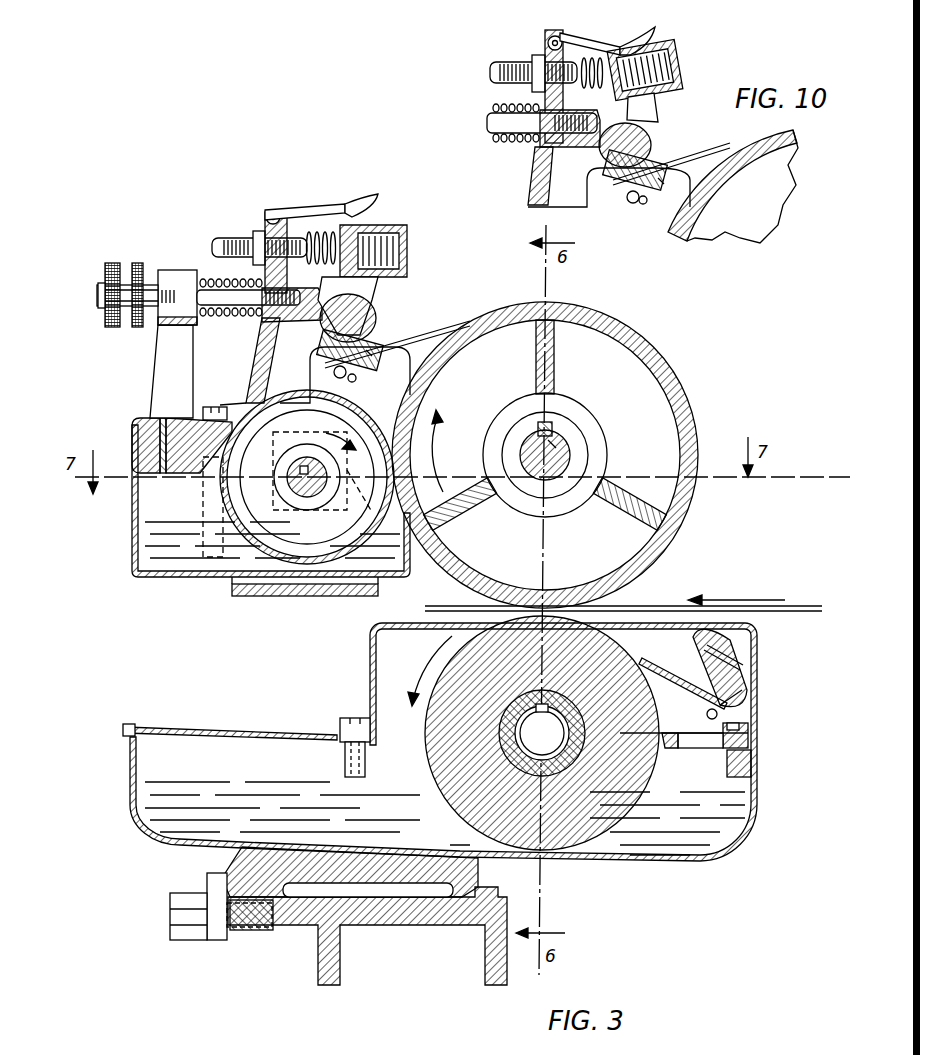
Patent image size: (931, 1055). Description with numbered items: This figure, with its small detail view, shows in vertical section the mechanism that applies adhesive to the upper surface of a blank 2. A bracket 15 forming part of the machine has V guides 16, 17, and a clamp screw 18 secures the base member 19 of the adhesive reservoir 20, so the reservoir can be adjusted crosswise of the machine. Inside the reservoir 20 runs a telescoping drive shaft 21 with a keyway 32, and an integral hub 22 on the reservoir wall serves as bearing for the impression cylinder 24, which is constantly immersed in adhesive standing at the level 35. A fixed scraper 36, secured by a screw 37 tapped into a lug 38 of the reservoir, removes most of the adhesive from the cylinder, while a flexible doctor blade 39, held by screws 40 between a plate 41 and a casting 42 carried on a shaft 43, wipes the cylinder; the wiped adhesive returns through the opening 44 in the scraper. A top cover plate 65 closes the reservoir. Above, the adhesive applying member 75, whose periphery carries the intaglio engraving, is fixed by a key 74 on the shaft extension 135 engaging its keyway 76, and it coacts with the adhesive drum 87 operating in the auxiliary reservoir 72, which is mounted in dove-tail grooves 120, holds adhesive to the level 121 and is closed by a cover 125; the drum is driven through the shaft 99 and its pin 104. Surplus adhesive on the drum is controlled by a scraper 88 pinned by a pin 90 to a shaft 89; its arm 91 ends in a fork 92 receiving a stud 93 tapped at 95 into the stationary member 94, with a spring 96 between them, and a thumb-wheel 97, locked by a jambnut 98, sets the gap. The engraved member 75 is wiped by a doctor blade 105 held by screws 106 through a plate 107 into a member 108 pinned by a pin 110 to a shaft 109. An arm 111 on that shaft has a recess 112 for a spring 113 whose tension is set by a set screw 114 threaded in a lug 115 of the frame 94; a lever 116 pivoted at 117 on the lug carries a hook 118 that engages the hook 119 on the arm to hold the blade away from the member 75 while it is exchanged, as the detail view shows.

In FIG. 3, the strip 2 is at (762, 609).
In FIG. 3, the bracket 15 is at (305, 935).
In FIG. 3, the V guide 16 is at (500, 892).
In FIG. 3, the V guide 17 is at (207, 878).
In FIG. 3, the clamp screw 18 is at (180, 918).
In FIG. 3, the base member 19 is at (275, 856).
In FIG. 3, the adhesive reservoir 20 is at (131, 784).
In FIG. 3, the telescoping drive shaft 21 is at (530, 735).
In FIG. 3, the integral hub 22 is at (520, 761).
In FIG. 3, the impression cylinder 24 is at (603, 644).
In FIG. 3, the keyway 32 is at (540, 711).
In FIG. 3, the adhesive level 35 is at (222, 779).
In FIG. 3, the fixed scraper 36 is at (669, 750).
In FIG. 3, the screw 37 is at (750, 731).
In FIG. 3, the lug 38 is at (753, 766).
In FIG. 3, the doctor blade 39 is at (688, 680).
In FIG. 3, the screws 40 is at (718, 716).
In FIG. 3, the plate 41 is at (744, 697).
In FIG. 3, the casting 42 is at (748, 681).
In FIG. 3, the shaft 43 is at (745, 657).
In FIG. 3, the opening 44 is at (699, 748).
In FIG. 3, the top cover plate 65 is at (419, 627).
In FIG. 3, the auxiliary adhesive reservoir 72 is at (133, 541).
In FIG. 3, the key 74 is at (560, 438).
In FIG. 10, the adhesive applying member 75 is at (696, 232).
In FIG. 3, the adhesive applying member 75 is at (684, 390).
In FIG. 3, the keyway 76 is at (552, 428).
In FIG. 3, the adhesive drum 87 is at (283, 396).
In FIG. 3, the scraper 88 is at (200, 418).
In FIG. 3, the shaft 89 is at (140, 436).
In FIG. 3, the pin 90 is at (152, 421).
In FIG. 3, the arm 91 is at (160, 359).
In FIG. 3, the forked member 92 is at (165, 285).
In FIG. 10, the stud 93 is at (490, 117).
In FIG. 3, the stud 93 is at (194, 290).
In FIG. 10, the stationary member 94 is at (533, 190).
In FIG. 3, the stationary member 94 is at (256, 363).
In FIG. 10, the tapped connection 95 is at (545, 142).
In FIG. 3, the tapped connection 95 is at (262, 316).
In FIG. 10, the spring 96 is at (493, 137).
In FIG. 3, the spring 96 is at (220, 280).
In FIG. 3, the thumb-wheel 97 is at (131, 270).
In FIG. 3, the jambnut 98 is at (104, 290).
In FIG. 3, the shaft 99 is at (300, 497).
In FIG. 3, the pin 104 is at (327, 498).
In FIG. 10, the doctor blade 105 is at (666, 180).
In FIG. 3, the doctor blade 105 is at (367, 353).
In FIG. 10, the screws 106 is at (643, 204).
In FIG. 3, the screws 106 is at (352, 372).
In FIG. 10, the plate 107 is at (627, 195).
In FIG. 3, the plate 107 is at (335, 368).
In FIG. 10, the member 108 is at (728, 147).
In FIG. 3, the member 108 is at (372, 334).
In FIG. 10, the shaft 109 is at (648, 130).
In FIG. 3, the shaft 109 is at (323, 340).
In FIG. 10, the pin 110 is at (605, 150).
In FIG. 3, the pin 110 is at (325, 314).
In FIG. 10, the arm 111 is at (648, 108).
In FIG. 3, the arm 111 is at (372, 291).
In FIG. 10, the recess 112 is at (676, 68).
In FIG. 3, the recess 112 is at (407, 268).
In FIG. 10, the spring 113 is at (598, 85).
In FIG. 3, the spring 113 is at (321, 261).
In FIG. 10, the set screw 114 is at (505, 64).
In FIG. 3, the set screw 114 is at (233, 238).
In FIG. 10, the lug 115 is at (538, 58).
In FIG. 3, the lug 115 is at (258, 232).
In FIG. 10, the lever 116 is at (588, 40).
In FIG. 3, the lever 116 is at (310, 212).
In FIG. 10, the pivot 117 is at (553, 36).
In FIG. 3, the pivot 117 is at (272, 211).
In FIG. 10, the hook 118 is at (641, 40).
In FIG. 3, the hook 118 is at (350, 213).
In FIG. 10, the hook 119 is at (622, 44).
In FIG. 3, the hook 119 is at (358, 219).
In FIG. 3, the dove-tail grooves 120 is at (338, 596).
In FIG. 3, the adhesive level 121 is at (170, 522).
In FIG. 3, the cover 125 is at (218, 733).
In FIG. 3, the extension 135 is at (566, 452).